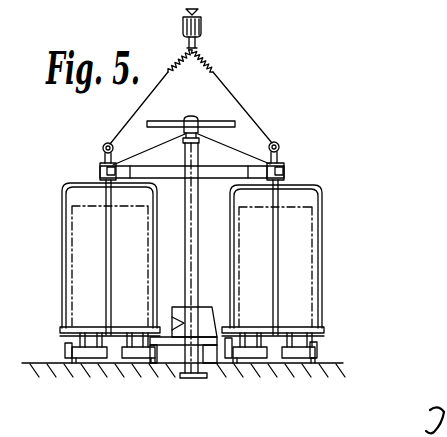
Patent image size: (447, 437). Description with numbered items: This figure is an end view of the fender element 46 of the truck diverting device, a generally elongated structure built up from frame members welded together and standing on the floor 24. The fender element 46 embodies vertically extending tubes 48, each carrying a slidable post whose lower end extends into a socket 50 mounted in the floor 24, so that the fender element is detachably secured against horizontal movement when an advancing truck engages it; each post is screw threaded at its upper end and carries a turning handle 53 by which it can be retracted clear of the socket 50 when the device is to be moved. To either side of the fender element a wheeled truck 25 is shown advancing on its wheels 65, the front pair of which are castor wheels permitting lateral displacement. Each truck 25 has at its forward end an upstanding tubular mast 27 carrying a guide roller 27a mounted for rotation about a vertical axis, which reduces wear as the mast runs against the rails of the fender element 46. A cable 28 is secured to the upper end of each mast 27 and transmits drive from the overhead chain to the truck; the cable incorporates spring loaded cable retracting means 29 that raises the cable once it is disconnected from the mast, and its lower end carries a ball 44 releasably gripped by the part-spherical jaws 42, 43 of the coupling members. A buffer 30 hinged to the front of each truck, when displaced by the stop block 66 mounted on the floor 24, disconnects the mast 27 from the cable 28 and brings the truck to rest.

The floor 24 is at (331, 374).
The wheeled truck 25 is at (65, 329).
The truck mast 27 is at (112, 256).
The guide roller 27a is at (156, 187).
The cable 28 is at (238, 90).
The spring loaded cable retracting means 29 is at (206, 58).
The buffer 30 is at (88, 354).
The part-spherical jaw 42 is at (102, 148).
The part-spherical jaw 43 is at (115, 147).
The ball 44 is at (101, 156).
The fender element 46 is at (217, 171).
The vertically extending tube 48 is at (185, 259).
The socket 50 is at (200, 380).
The turning handle 53 is at (173, 122).
The truck wheels 65 is at (68, 350).
The stop block 66 is at (173, 353).